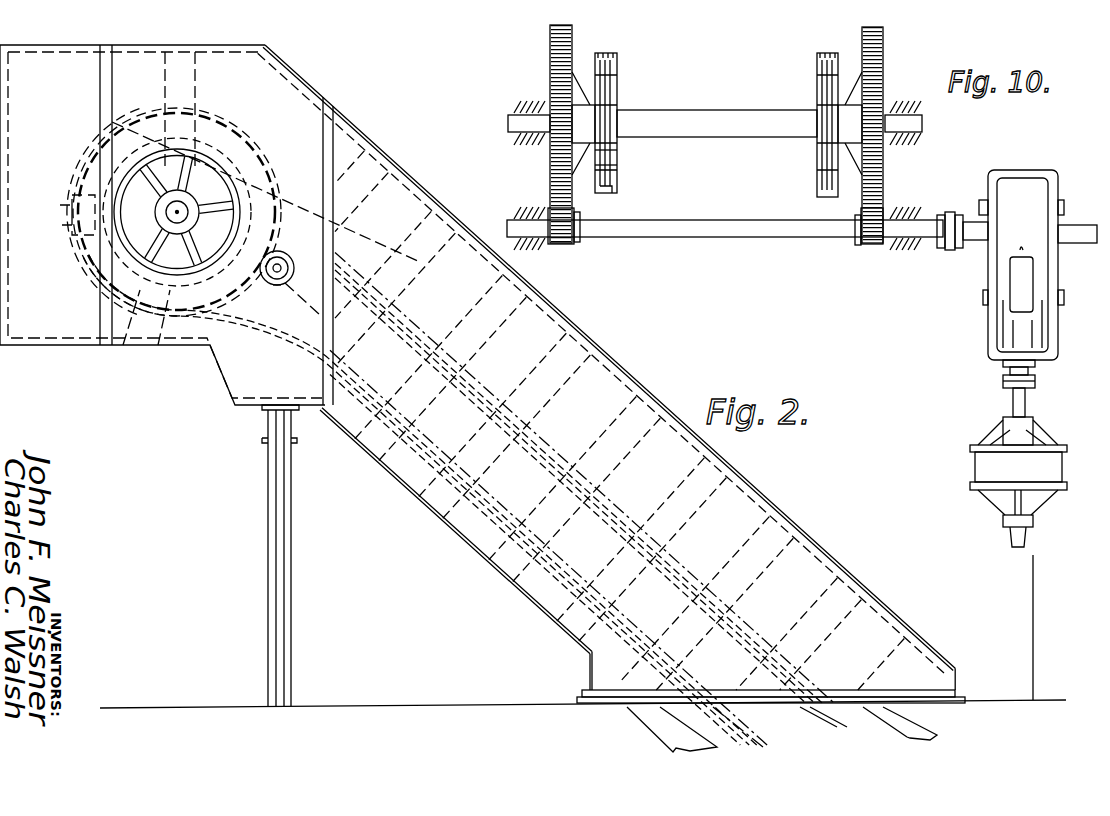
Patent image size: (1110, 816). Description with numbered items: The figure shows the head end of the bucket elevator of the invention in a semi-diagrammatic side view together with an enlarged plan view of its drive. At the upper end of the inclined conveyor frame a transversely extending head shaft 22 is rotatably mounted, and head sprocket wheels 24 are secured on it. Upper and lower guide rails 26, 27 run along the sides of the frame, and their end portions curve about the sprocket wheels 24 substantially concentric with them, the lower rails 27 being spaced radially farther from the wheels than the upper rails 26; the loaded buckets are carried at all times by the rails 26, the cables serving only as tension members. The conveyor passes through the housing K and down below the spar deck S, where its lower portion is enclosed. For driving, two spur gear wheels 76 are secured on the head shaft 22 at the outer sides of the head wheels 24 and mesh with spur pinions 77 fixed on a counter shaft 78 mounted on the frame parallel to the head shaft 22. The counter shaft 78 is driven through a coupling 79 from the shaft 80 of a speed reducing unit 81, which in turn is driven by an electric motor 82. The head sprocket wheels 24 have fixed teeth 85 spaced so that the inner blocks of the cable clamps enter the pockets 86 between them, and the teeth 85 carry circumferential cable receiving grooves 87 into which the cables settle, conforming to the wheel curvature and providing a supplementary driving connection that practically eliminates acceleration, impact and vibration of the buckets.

In FIG. 2, the head shaft 22 is at (176, 207).
In FIG. 10, the head shaft 22 is at (690, 117).
In FIG. 2, the head sprocket wheels 24 is at (250, 218).
In FIG. 10, the head sprocket wheels 24 is at (617, 68).
In FIG. 2, the upper guide rails 26 is at (693, 560).
In FIG. 2, the lower guide rails 27 is at (456, 533).
In FIG. 2, the spur gear wheels 76 is at (214, 124).
In FIG. 10, the spur gear wheels 76 is at (560, 44).
In FIG. 2, the spur pinions 77 is at (297, 269).
In FIG. 10, the spur pinions 77 is at (561, 243).
In FIG. 2, the counter shaft 78 is at (268, 293).
In FIG. 10, the counter shaft 78 is at (722, 238).
In FIG. 10, the coupling 79 is at (947, 252).
In FIG. 10, the shaft of speed reducing unit 80 is at (1080, 225).
In FIG. 10, the speed reducing unit 81 is at (1011, 185).
In FIG. 10, the electric motor 82 is at (982, 462).
In FIG. 10, the teeth 85 is at (606, 172).
In FIG. 10, the pockets 86 is at (606, 153).
In FIG. 10, the cable receiving grooves 87 is at (606, 185).
In FIG. 2, the housing K is at (412, 180).
In FIG. 2, the spar deck S is at (200, 706).